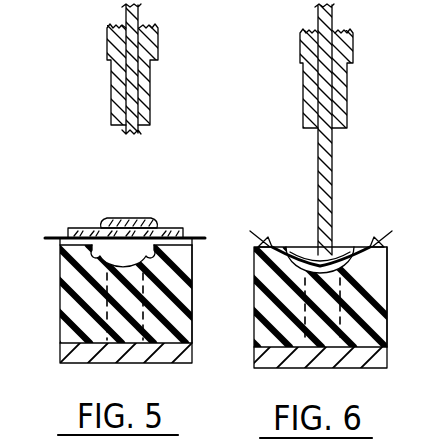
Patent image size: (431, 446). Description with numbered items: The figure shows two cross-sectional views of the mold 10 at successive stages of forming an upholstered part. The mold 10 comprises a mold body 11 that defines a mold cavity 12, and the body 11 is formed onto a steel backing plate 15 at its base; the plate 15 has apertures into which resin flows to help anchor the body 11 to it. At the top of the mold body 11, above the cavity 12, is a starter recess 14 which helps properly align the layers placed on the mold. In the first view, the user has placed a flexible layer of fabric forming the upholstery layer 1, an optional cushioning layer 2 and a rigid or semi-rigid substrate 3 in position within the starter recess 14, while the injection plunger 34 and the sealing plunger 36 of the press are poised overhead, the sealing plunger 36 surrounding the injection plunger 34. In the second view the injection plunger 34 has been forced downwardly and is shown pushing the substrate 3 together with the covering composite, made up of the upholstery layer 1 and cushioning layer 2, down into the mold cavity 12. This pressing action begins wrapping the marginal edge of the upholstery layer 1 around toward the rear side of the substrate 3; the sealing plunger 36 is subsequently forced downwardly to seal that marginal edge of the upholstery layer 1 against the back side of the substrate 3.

In FIG. 5, the upholstery layer 1 is at (59, 228).
In FIG. 6, the upholstery layer 1 is at (321, 239).
In FIG. 5, the cushioning layer 2 is at (88, 226).
In FIG. 5, the substrate 3 is at (118, 209).
In FIG. 5, the mold 10 is at (50, 304).
In FIG. 6, the mold 10 is at (242, 309).
In FIG. 5, the mold body 11 is at (192, 262).
In FIG. 6, the mold body 11 is at (388, 265).
In FIG. 5, the mold cavity 12 is at (123, 257).
In FIG. 6, the mold cavity 12 is at (321, 260).
In FIG. 5, the starter recess 14 is at (148, 233).
In FIG. 5, the steel backing plate 15 is at (56, 352).
In FIG. 6, the steel backing plate 15 is at (318, 357).
In FIG. 5, the injection plunger 34 is at (133, 134).
In FIG. 6, the injection plunger 34 is at (335, 172).
In FIG. 5, the sealing plunger 36 is at (150, 83).
In FIG. 6, the sealing plunger 36 is at (346, 79).